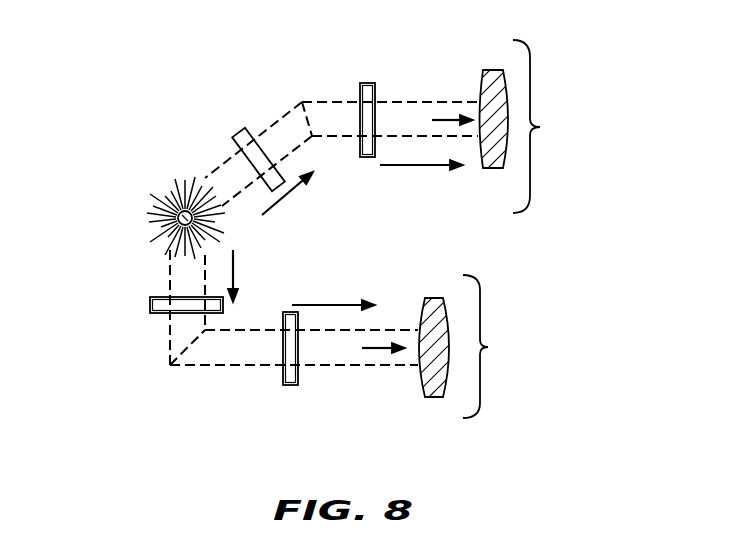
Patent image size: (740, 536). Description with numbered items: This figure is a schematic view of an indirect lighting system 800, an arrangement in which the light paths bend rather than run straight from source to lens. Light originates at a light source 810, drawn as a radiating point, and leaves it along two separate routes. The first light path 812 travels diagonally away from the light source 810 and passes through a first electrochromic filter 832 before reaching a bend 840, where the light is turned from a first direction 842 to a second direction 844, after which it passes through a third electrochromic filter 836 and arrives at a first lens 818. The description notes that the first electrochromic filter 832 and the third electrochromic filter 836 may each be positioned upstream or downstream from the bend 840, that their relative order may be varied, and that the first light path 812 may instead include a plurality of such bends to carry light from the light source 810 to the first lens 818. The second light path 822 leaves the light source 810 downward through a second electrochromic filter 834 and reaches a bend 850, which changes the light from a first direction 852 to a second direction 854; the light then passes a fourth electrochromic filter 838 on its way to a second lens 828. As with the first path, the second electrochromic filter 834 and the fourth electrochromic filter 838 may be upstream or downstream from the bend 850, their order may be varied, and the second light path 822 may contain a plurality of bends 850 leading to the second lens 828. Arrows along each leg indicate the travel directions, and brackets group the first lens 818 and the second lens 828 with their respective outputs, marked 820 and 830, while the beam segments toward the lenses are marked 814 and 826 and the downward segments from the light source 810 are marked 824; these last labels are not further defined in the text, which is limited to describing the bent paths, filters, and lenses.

The indirect lighting system 800 is at (143, 103).
The light source 810 is at (167, 205).
The first light path 812 is at (270, 130).
The light beam portion 814 is at (465, 108).
The first lens 818 is at (480, 86).
The first detection channel 820 is at (540, 127).
The second light path 822 is at (255, 330).
The reflected light beam 824 is at (183, 273).
The light beam portion 826 is at (405, 352).
The second lens 828 is at (417, 377).
The second detection channel 830 is at (488, 347).
The first electrochromic filter 832 is at (242, 135).
The second electrochromic filter 834 is at (150, 305).
The third electrochromic filter 836 is at (360, 92).
The fourth electrochromic filter 838 is at (283, 375).
The bend 840 is at (302, 106).
The first direction 842 is at (278, 198).
The second direction 844 is at (415, 165).
The bend 850 is at (172, 362).
The first direction 852 is at (234, 266).
The second direction 854 is at (325, 305).